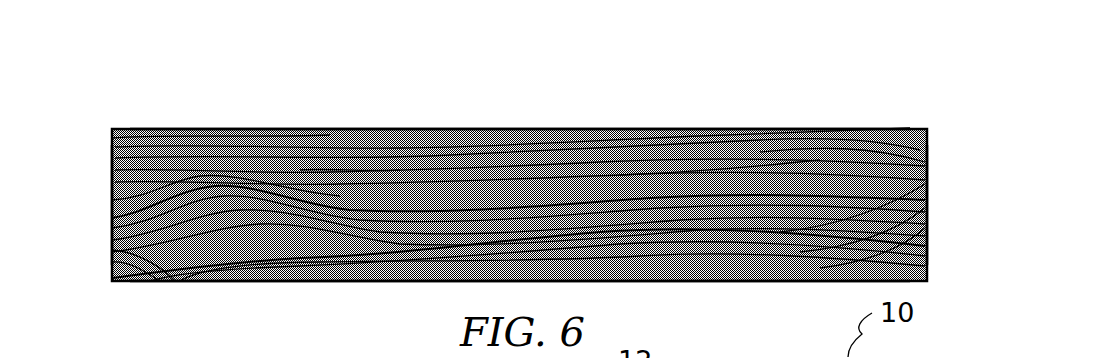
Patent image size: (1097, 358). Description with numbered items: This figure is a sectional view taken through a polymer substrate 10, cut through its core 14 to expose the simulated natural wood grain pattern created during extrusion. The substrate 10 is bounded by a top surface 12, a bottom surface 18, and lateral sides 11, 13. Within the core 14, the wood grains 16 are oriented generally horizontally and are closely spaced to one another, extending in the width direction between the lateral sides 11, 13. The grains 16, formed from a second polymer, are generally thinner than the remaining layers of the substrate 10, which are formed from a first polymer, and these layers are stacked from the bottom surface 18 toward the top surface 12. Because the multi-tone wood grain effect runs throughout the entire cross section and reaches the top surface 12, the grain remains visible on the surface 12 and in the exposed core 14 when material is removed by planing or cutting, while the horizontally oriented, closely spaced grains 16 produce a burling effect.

The polymer substrate 10 is at (786, 112).
The lateral side 11 is at (112, 178).
The top surface 12 is at (530, 128).
The lateral side 13 is at (927, 178).
The core 14 is at (688, 173).
The wood grains 16 is at (347, 225).
The bottom surface 18 is at (818, 283).